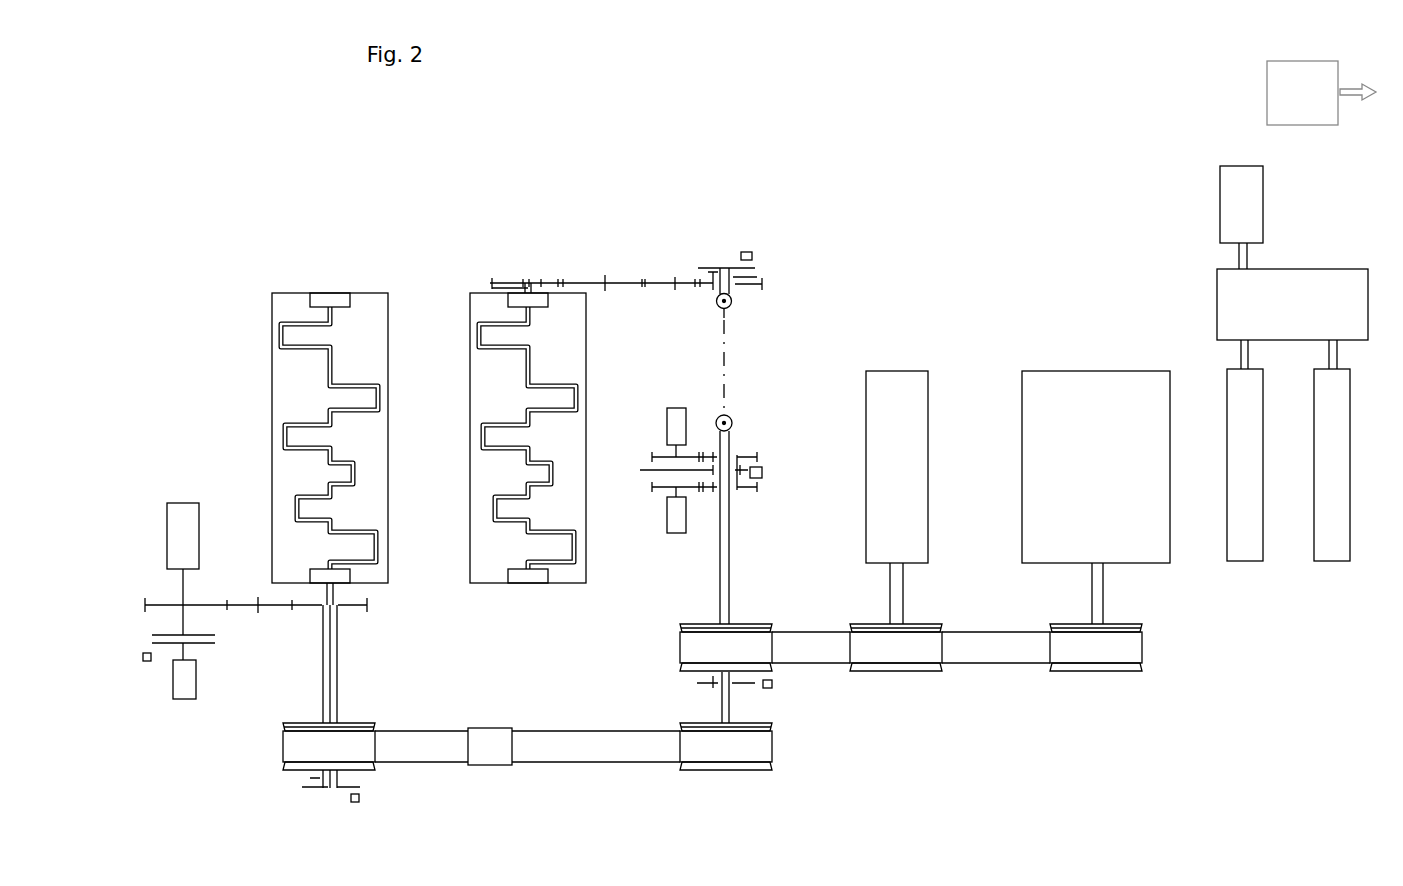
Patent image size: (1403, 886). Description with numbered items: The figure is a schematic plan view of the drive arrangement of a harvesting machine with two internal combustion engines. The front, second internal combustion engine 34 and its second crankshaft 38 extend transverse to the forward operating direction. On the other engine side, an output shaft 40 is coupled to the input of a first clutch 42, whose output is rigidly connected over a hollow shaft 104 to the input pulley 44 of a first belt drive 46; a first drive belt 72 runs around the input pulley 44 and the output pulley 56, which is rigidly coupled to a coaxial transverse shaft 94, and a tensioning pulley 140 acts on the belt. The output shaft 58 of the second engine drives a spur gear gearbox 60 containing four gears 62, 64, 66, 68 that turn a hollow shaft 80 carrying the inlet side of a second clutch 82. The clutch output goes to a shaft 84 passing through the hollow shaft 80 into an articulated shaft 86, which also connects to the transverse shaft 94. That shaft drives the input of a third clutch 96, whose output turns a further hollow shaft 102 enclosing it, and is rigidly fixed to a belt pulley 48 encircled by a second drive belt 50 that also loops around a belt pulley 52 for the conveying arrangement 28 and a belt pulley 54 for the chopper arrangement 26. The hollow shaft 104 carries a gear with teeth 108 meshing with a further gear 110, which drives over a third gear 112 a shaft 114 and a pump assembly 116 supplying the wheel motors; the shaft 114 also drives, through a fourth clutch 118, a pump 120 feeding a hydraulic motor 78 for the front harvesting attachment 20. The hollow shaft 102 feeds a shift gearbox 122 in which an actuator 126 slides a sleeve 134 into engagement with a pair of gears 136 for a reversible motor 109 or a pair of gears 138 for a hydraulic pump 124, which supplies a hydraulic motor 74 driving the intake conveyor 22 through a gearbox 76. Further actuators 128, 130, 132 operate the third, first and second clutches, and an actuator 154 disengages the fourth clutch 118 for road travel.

The front harvesting attachment 20 is at (1370, 93).
The intake conveyor 22 is at (1325, 578).
The chopper arrangement 26 is at (1118, 393).
The conveying arrangement 28 is at (890, 398).
The second internal combustion engine 34 is at (285, 367).
The second crankshaft 38 is at (330, 461).
The output shaft 40 is at (327, 592).
The first clutch 42 is at (365, 785).
The input pulley 44 is at (370, 722).
The first belt drive 46 is at (778, 748).
The belt pulley 48 is at (760, 627).
The second drive belt 50 is at (835, 650).
The belt pulley 52 is at (912, 672).
The belt pulley 54 is at (1120, 672).
The output pulley 56 is at (690, 770).
The output shaft 58 is at (492, 286).
The spur gear gearbox 60 is at (607, 222).
The gear 62 is at (541, 283).
The gear 64 is at (583, 283).
The gear 66 is at (684, 290).
The gear 68 is at (710, 290).
The first drive belt 72 is at (570, 752).
The hydraulic motor 74 is at (1237, 197).
The gearbox 76 is at (1302, 292).
The hydraulic motor 78 is at (1275, 92).
The hollow shaft 80 is at (757, 273).
The second clutch 82 is at (700, 270).
The shaft 84 is at (733, 294).
The articulated shaft 86 is at (733, 352).
The transverse shaft 94 is at (735, 428).
The third clutch 96 is at (690, 683).
The hollow shaft 102 is at (733, 500).
The hollow shaft 104 is at (323, 665).
The gear with teeth 108 is at (352, 607).
The reversible motor 109 is at (668, 425).
The further gear 110 is at (275, 610).
The third gear 112 is at (150, 600).
The shaft 114 is at (183, 590).
The pump assembly 116 is at (185, 533).
The fourth clutch 118 is at (150, 642).
The pump 120 is at (180, 688).
The shift gearbox 122 is at (775, 482).
The hydraulic pump 124 is at (676, 528).
The actuator 126 is at (759, 468).
The actuator 128 is at (773, 683).
The actuator 130 is at (355, 803).
The actuator 132 is at (752, 255).
The sleeve 134 is at (640, 469).
The pair of gears 136 is at (650, 452).
The pair of gears 138 is at (650, 492).
The tensioning pulley 140 is at (493, 728).
The actuator 154 is at (145, 661).